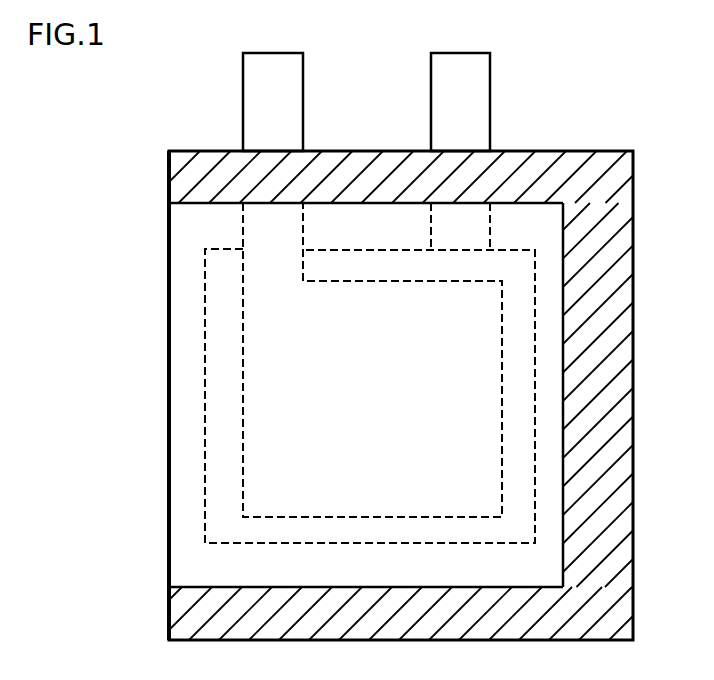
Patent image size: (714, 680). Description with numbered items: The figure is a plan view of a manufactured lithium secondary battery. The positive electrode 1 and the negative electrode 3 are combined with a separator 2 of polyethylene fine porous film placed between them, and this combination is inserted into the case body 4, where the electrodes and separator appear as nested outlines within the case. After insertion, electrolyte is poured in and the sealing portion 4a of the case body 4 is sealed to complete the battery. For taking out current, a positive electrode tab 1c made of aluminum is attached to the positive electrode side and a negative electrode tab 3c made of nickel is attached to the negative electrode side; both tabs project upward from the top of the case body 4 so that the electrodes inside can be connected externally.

The positive electrode 1 is at (233, 474).
The positive electrode tab 1c is at (258, 92).
The separator 2 is at (192, 355).
The negative electrode 3 is at (500, 99).
The negative electrode tab 3c is at (445, 92).
The case body 4 is at (168, 260).
The sealing portion 4a is at (175, 181).